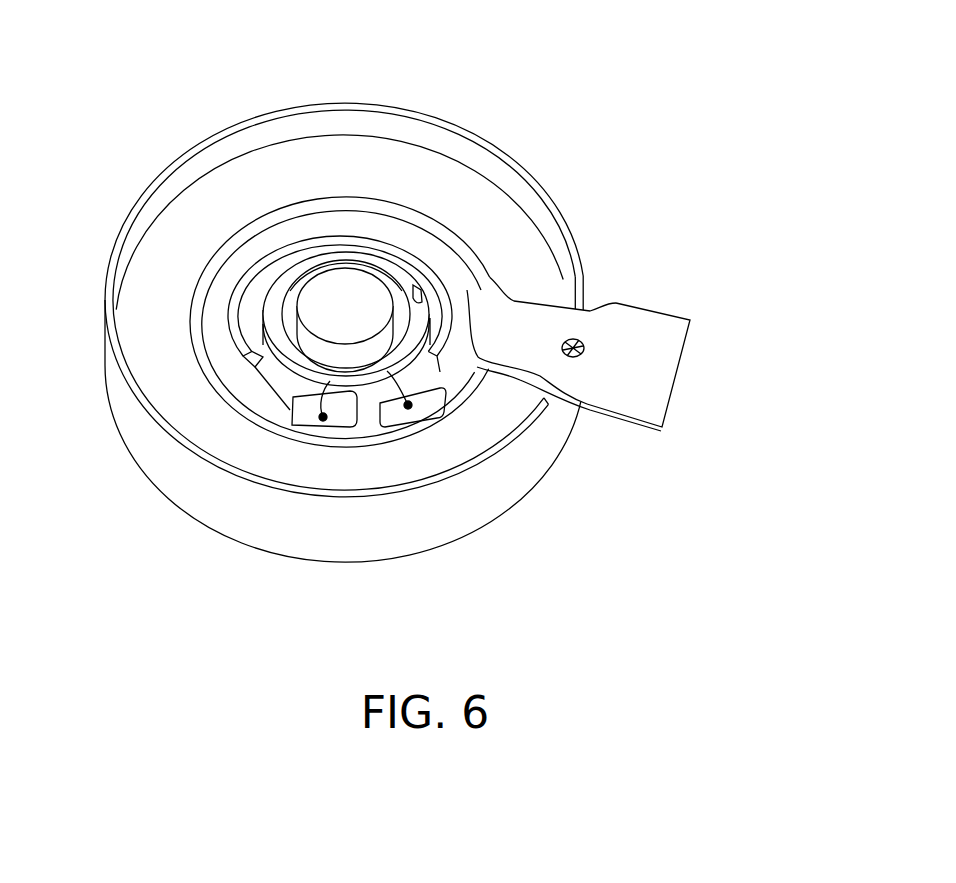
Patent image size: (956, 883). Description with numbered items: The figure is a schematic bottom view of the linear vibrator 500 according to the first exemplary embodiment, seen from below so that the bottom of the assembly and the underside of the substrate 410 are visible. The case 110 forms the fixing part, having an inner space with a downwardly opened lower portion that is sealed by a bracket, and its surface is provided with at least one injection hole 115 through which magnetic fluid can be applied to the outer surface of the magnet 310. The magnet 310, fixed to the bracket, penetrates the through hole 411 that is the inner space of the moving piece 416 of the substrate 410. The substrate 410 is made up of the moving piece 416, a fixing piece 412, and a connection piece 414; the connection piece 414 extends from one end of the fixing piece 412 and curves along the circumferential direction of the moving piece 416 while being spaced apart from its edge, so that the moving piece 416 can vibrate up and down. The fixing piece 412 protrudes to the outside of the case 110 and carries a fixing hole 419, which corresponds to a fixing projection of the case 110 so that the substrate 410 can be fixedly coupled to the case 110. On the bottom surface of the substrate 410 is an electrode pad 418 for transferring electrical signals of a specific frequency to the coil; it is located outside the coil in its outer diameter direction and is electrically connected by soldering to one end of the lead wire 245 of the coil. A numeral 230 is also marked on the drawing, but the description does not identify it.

The linear vibrator 500 is at (419, 349).
The case 110 is at (392, 523).
The ring plate 230 is at (478, 190).
The connection piece 414 is at (320, 207).
The through hole 411 is at (427, 300).
The magnet 310 is at (323, 320).
The electrode pad 418 is at (302, 420).
The moving piece 416 is at (372, 420).
The lead wire 245 is at (337, 422).
The substrate 410 is at (520, 320).
The fixing piece 412 is at (643, 365).
The fixing hole 419 is at (584, 348).
The injection hole 115 is at (583, 337).